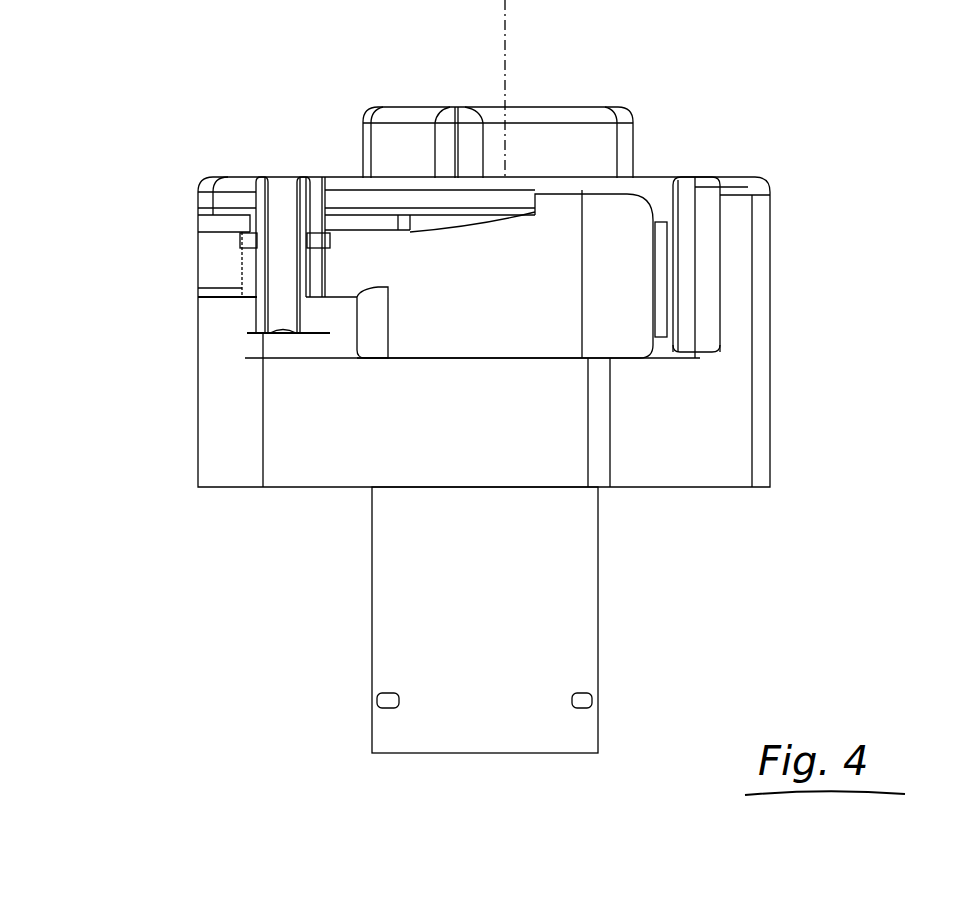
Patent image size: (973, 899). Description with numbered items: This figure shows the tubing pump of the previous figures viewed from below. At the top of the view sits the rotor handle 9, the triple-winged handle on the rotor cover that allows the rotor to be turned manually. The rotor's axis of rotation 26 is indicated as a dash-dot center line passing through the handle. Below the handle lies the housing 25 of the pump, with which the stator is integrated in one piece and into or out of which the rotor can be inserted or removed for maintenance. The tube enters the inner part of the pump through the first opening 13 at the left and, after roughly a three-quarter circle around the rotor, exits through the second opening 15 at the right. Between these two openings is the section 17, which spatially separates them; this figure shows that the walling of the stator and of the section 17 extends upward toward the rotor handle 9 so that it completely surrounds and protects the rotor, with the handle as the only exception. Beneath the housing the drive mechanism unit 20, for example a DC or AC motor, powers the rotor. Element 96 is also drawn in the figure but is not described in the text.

The rotor handle 9 is at (598, 158).
The first opening 13 is at (290, 243).
The second opening 15 is at (665, 272).
The section 17 is at (530, 296).
The drive mechanism unit 20 is at (562, 638).
The housing 25 is at (375, 426).
The axis of rotation 26 is at (504, 12).
The cap feature 96 is at (467, 148).